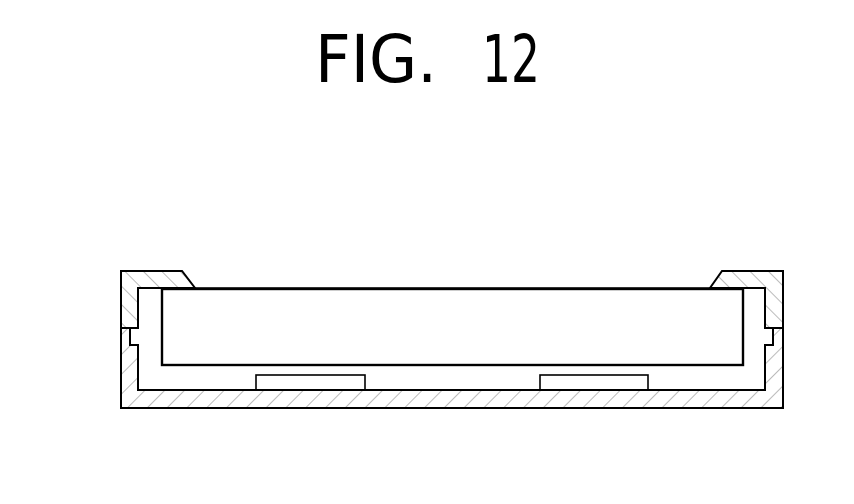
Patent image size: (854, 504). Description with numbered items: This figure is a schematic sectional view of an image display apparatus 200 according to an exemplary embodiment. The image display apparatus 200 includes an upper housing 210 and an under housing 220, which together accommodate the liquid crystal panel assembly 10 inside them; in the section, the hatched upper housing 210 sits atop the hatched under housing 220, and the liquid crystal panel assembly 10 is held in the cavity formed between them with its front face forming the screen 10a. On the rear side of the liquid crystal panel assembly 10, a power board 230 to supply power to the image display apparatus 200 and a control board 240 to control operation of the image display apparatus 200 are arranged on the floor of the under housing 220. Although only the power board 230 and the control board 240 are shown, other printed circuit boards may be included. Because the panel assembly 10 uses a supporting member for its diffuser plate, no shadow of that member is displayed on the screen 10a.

The image display apparatus 200 is at (428, 189).
The liquid crystal panel assembly 10 is at (452, 283).
The screen 10a is at (625, 288).
The upper housing 210 is at (128, 293).
The under housing 220 is at (129, 384).
The power board 230 is at (365, 383).
The control board 240 is at (648, 383).